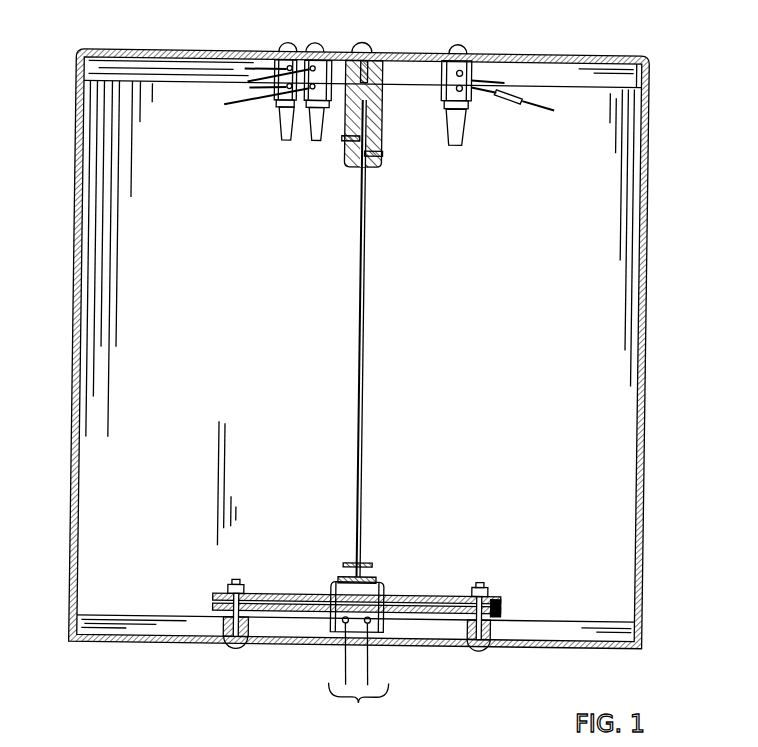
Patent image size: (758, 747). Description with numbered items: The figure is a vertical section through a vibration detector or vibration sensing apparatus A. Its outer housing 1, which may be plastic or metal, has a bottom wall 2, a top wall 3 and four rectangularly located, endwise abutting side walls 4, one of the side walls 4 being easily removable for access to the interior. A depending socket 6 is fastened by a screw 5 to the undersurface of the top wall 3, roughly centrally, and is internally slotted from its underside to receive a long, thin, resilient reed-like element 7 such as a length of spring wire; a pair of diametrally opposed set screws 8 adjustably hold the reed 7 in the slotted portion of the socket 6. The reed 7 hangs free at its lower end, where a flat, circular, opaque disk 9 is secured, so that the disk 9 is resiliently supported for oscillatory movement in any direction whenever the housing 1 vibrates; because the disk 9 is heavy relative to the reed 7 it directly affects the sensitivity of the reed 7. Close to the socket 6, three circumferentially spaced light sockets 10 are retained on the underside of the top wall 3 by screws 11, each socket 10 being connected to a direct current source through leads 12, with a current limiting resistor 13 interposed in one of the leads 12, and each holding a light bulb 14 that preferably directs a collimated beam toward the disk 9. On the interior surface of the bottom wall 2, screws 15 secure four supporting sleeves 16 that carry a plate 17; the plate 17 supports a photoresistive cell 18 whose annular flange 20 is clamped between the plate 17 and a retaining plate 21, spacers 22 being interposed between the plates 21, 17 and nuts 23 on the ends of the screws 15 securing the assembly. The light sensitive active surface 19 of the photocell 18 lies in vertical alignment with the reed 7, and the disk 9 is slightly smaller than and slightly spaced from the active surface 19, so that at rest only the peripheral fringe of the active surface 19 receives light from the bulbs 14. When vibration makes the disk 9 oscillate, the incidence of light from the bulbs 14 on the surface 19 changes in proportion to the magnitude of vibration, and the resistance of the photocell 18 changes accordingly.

The vibration sensing apparatus A is at (650, 287).
The outer housing 1 is at (645, 382).
The bottom wall 2 is at (557, 645).
The top wall 3 is at (172, 49).
The side walls 4 is at (72, 408).
The screw 5 is at (365, 46).
The socket 6 is at (380, 72).
The reed-like element 7 is at (363, 345).
The set screws 8 is at (345, 140).
The opaque disk 9 is at (372, 562).
The light sockets 10 is at (283, 57).
The screws 11 is at (290, 46).
The leads 12 is at (500, 82).
The current limiting resistor 13 is at (518, 95).
The light bulb 14 is at (285, 142).
The screws 15 is at (478, 652).
The supporting sleeves 16 is at (491, 629).
The plate 17 is at (497, 612).
The photoresistive cell 18 is at (386, 590).
The active surface 19 is at (340, 578).
The annular flange 20 is at (322, 600).
The retaining plate 21 is at (491, 600).
The spacers 22 is at (501, 605).
The nuts 23 is at (468, 590).